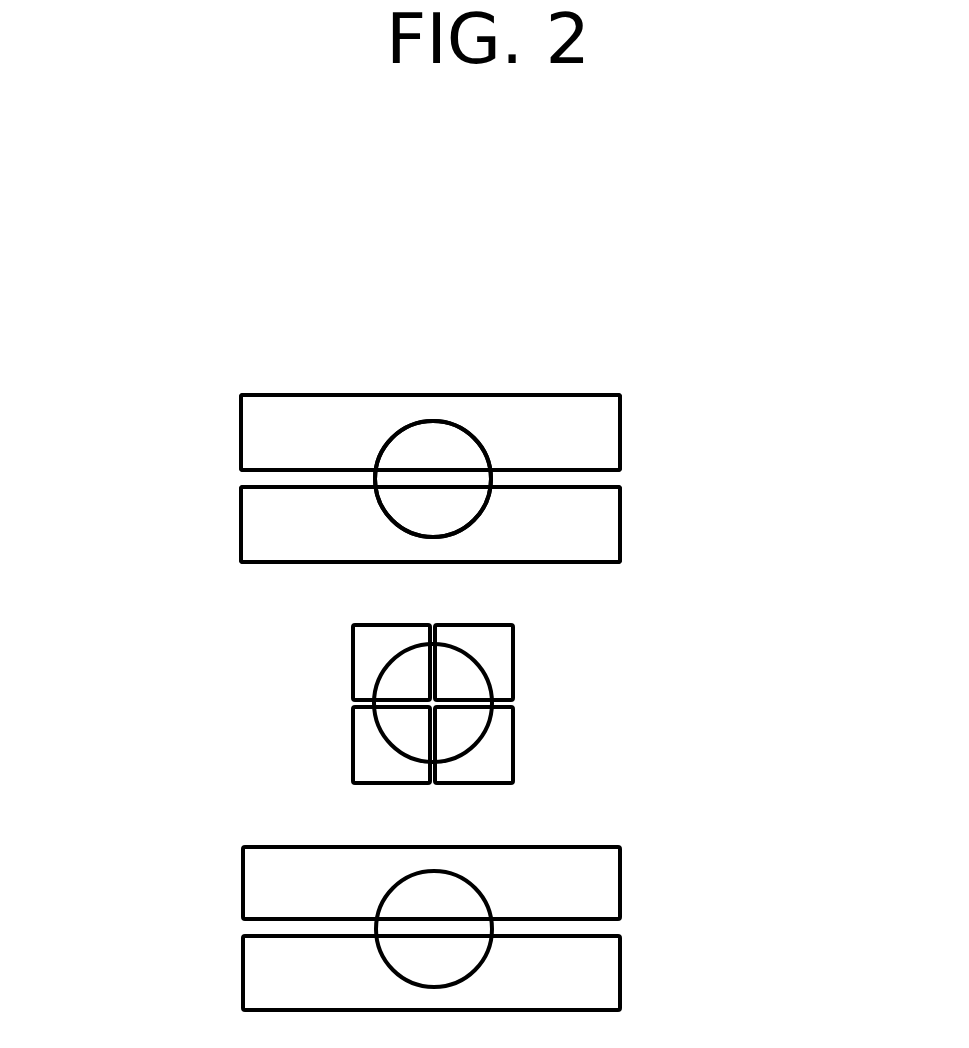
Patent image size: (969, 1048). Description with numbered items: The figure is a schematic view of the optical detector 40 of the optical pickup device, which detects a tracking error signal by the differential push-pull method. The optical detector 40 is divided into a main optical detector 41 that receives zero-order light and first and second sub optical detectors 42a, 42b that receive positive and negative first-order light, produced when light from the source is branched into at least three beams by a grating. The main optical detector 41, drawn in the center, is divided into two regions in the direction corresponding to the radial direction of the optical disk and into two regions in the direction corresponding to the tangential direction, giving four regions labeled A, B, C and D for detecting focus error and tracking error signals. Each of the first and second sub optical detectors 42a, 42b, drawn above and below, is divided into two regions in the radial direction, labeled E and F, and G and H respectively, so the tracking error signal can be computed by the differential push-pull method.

The optical detector 40 is at (217, 375).
The main optical detector 41 is at (525, 715).
The first sub optical detector 42a is at (640, 480).
The second sub optical detector 42b is at (640, 930).